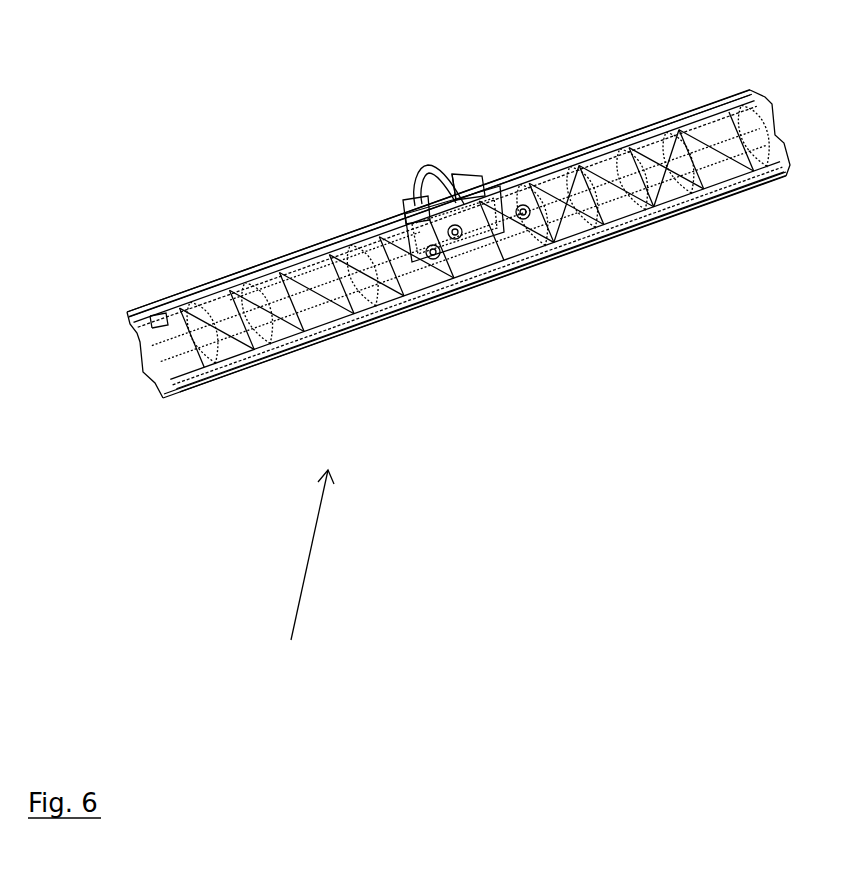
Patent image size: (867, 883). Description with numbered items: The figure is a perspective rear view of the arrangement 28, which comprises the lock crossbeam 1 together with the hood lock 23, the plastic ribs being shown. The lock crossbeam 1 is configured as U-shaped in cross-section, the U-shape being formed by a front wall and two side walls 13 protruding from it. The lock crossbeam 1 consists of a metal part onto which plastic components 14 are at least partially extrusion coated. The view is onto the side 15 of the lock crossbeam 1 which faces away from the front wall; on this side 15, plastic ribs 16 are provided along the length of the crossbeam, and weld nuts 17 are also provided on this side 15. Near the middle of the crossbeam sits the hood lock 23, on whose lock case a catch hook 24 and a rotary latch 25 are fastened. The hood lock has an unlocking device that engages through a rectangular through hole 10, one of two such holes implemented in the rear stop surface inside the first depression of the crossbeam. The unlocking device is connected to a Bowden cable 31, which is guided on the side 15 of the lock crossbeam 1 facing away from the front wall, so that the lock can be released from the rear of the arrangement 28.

The lock crossbeam 1 is at (472, 269).
The rectangular through hole 10 is at (455, 235).
The side wall 13 is at (636, 133).
The plastic component 14 is at (160, 318).
The side of the lock crossbeam facing away from the front wall 15 is at (240, 330).
The plastic ribs 16 is at (479, 234).
The weld nuts 17 is at (425, 248).
The hood lock 23 is at (408, 208).
The catch hook 24 is at (427, 162).
The rotary latch 25 is at (458, 168).
The arrangement 28 is at (304, 576).
The Bowden cable 31 is at (357, 270).